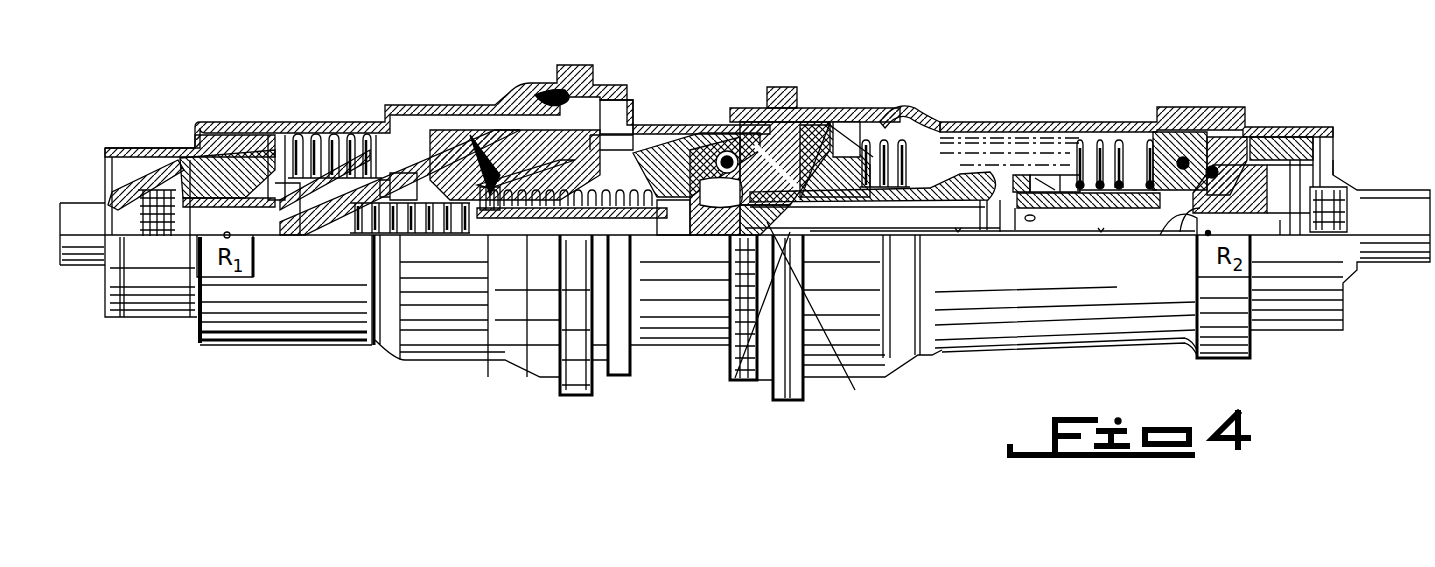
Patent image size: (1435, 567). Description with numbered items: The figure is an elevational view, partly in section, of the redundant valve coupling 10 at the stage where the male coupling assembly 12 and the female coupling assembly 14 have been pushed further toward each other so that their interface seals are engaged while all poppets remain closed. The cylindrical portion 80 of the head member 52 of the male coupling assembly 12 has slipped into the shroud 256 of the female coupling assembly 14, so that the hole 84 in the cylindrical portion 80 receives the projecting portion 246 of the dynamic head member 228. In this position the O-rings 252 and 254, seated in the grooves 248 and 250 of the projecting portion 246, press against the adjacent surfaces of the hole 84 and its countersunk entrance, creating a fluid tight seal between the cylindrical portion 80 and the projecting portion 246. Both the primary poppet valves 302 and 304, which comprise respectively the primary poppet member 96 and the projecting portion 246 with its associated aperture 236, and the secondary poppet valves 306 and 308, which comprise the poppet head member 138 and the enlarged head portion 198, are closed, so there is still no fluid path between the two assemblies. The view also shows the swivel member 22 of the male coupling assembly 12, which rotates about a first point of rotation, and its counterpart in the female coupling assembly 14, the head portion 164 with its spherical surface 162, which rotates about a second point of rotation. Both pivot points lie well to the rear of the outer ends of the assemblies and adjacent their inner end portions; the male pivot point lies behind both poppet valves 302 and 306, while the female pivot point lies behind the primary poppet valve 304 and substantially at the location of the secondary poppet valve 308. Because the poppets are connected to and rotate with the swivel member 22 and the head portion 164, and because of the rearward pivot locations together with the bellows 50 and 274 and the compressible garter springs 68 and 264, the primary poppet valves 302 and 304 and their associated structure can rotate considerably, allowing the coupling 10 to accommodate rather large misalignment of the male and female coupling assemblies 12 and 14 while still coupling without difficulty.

The redundant valve coupling 10 is at (872, 52).
The male coupling assembly 12 is at (406, 88).
The female coupling assembly 14 is at (999, 116).
The swivel member 22 is at (245, 178).
The bellows 50 is at (345, 128).
The head member 52 is at (628, 124).
The compressible garter spring 68 is at (535, 86).
The cylindrical portion 80 is at (695, 157).
The hole 84 is at (796, 135).
The primary poppet member 96 is at (660, 218).
The poppet head member 138 is at (463, 237).
The spherical surface 162 is at (1170, 127).
The head portion 164 is at (1207, 150).
The enlarged head portion 198 is at (1197, 232).
The dynamic head member 228 is at (897, 110).
The aperture 236 is at (737, 372).
The projecting portion 246 is at (770, 108).
The groove 248 is at (727, 200).
The groove 250 is at (812, 148).
The O-ring 252 is at (693, 195).
The O-ring 254 is at (808, 210).
The shroud 256 is at (718, 160).
The compressible garter spring 264 is at (825, 130).
The bellows 274 is at (1085, 138).
The primary poppet valve 302 is at (668, 137).
The primary poppet valve 304 is at (827, 321).
The secondary poppet valve 306 is at (497, 170).
The secondary poppet valve 308 is at (1237, 153).